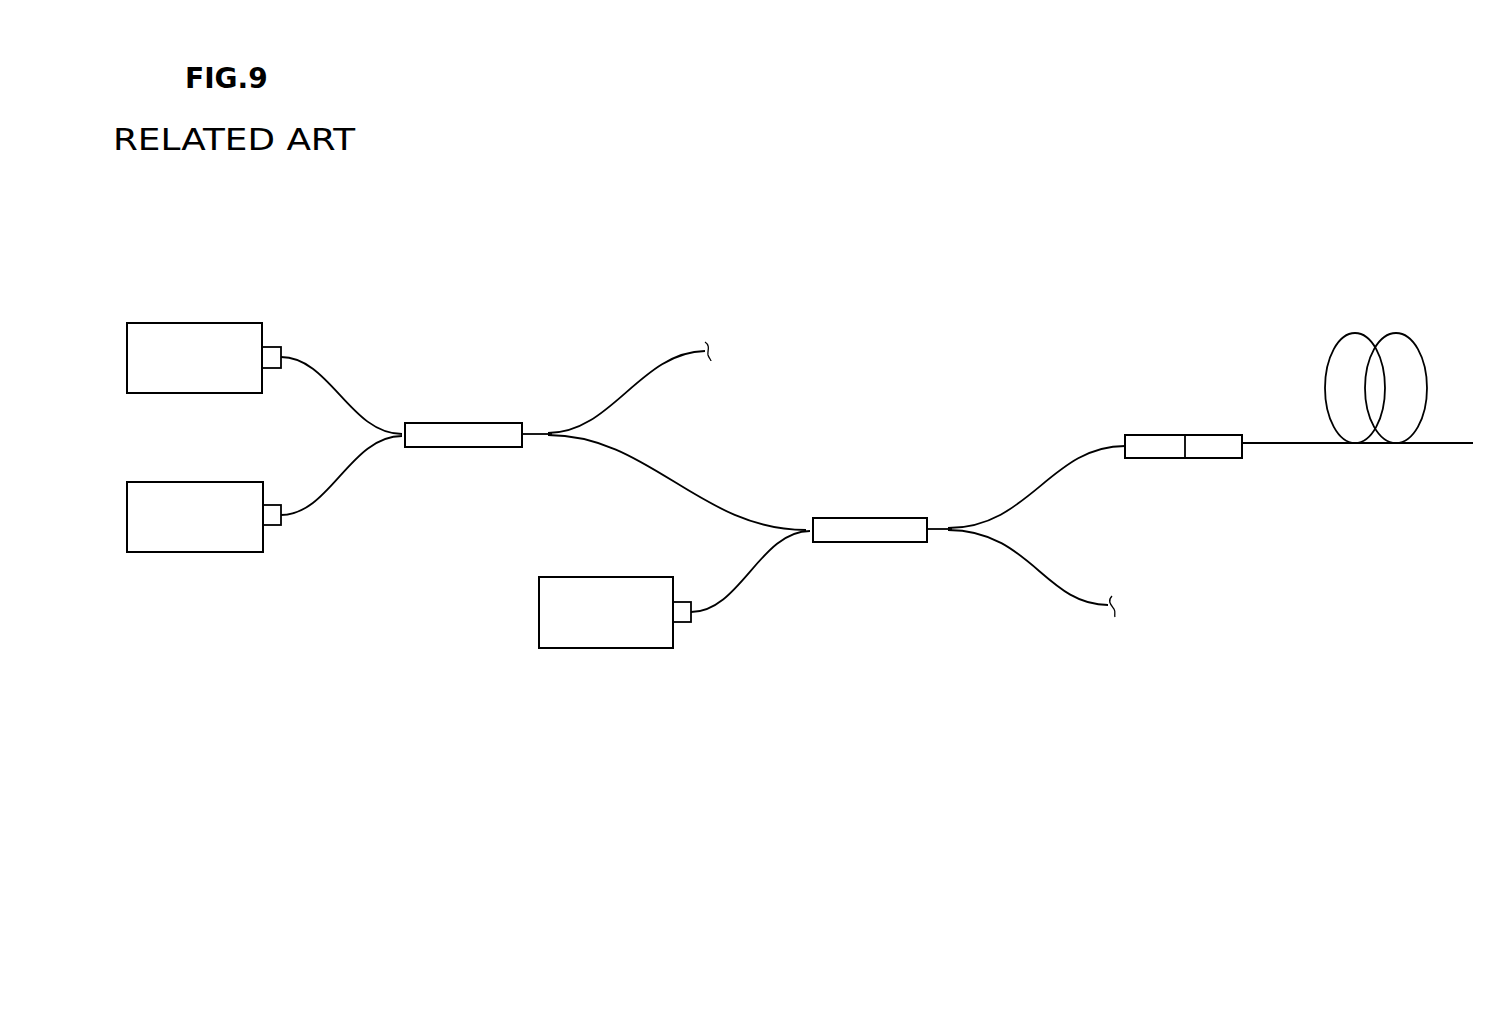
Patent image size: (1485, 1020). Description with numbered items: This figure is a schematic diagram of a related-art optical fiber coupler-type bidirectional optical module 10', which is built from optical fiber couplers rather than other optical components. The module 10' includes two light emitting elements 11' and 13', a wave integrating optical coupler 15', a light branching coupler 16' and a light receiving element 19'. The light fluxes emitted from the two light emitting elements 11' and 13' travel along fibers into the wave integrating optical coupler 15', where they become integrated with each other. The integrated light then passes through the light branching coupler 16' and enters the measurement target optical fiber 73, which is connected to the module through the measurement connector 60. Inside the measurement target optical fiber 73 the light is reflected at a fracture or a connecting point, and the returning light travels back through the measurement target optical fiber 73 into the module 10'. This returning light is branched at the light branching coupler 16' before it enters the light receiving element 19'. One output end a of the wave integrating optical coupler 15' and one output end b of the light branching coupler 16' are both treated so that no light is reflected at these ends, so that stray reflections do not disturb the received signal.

The optical fiber coupler-type bidirectional optical module 10' is at (862, 172).
The light emitting element 11' is at (204, 325).
The light emitting element 13' is at (204, 549).
The wave integrating optical coupler 15' is at (478, 401).
The light branching coupler 16' is at (882, 496).
The light receiving element 19' is at (674, 621).
The measurement connector 60 is at (1153, 435).
The measurement target optical fiber 73 is at (1436, 445).
The output end a is at (711, 360).
The output end b is at (1115, 614).